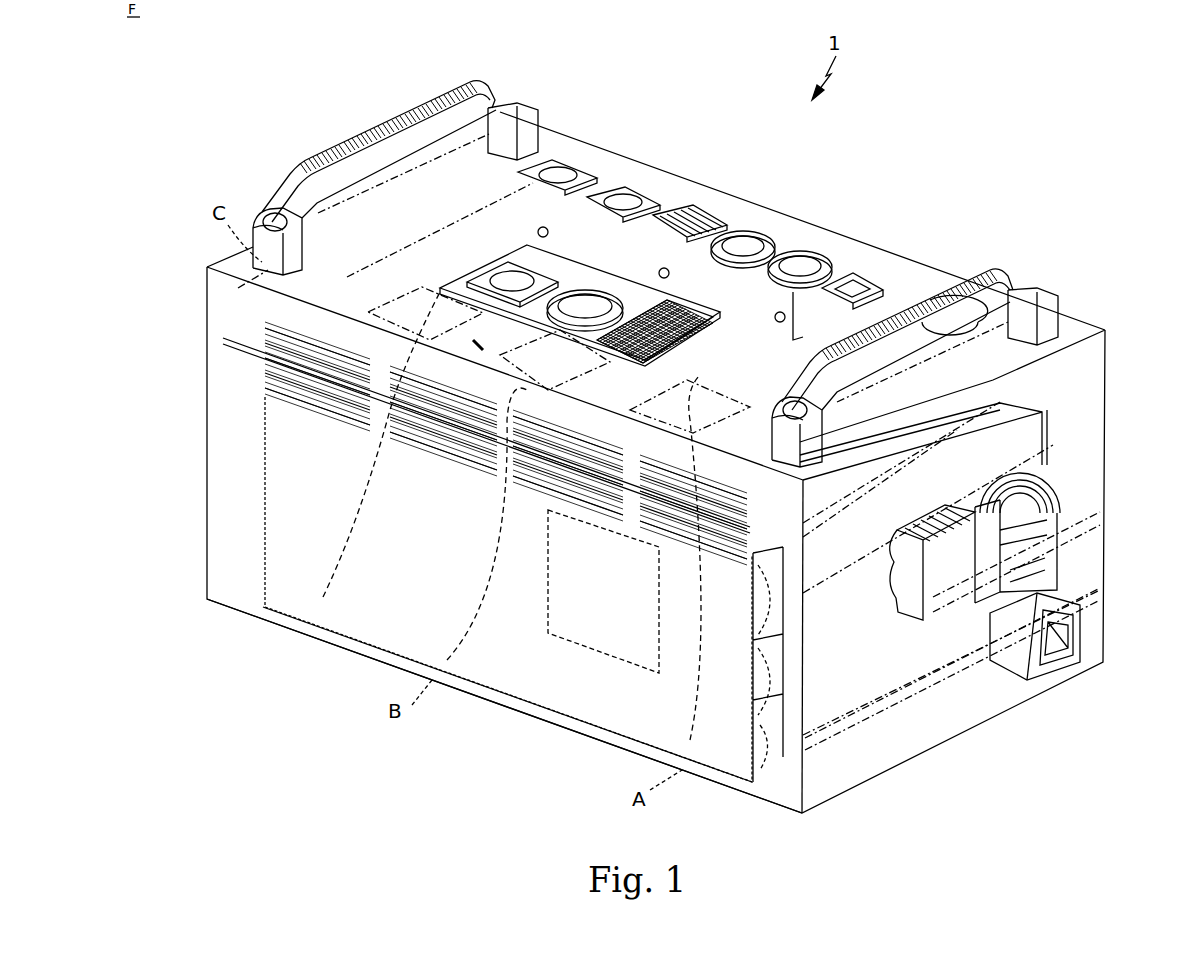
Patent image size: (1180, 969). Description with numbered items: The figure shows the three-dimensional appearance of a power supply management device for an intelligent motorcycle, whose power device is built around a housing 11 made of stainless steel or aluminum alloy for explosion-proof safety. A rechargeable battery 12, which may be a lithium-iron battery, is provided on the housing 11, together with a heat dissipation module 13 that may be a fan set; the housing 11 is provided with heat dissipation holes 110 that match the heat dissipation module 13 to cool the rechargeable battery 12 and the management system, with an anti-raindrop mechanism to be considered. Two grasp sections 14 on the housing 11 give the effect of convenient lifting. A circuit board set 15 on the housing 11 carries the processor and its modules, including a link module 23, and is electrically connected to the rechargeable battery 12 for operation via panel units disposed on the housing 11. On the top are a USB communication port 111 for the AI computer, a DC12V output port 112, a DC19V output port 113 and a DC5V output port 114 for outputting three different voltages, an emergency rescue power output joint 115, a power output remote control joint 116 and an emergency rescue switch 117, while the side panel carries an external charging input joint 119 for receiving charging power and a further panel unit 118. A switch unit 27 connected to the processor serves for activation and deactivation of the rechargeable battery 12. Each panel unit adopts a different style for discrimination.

The housing 11 is at (207, 448).
The rechargeable battery 12 is at (850, 735).
The heat dissipation module 13 is at (355, 655).
The grasp sections 14 is at (381, 133).
The circuit board set 15 is at (285, 618).
The link module 23 is at (590, 630).
The switch unit 27 is at (500, 250).
The heat dissipation holes 110 is at (225, 338).
The USB communication port 111 is at (866, 272).
The DC12V output port 112 is at (810, 250).
The DC19V output port 113 is at (745, 230).
The DC5V output port 114 is at (700, 213).
The emergency rescue power output joint 115 is at (632, 190).
The power output remote control joint 116 is at (562, 165).
The emergency rescue switch 117 is at (920, 290).
The power cable plug 118 is at (1060, 513).
The external charging input joint 119 is at (1085, 632).